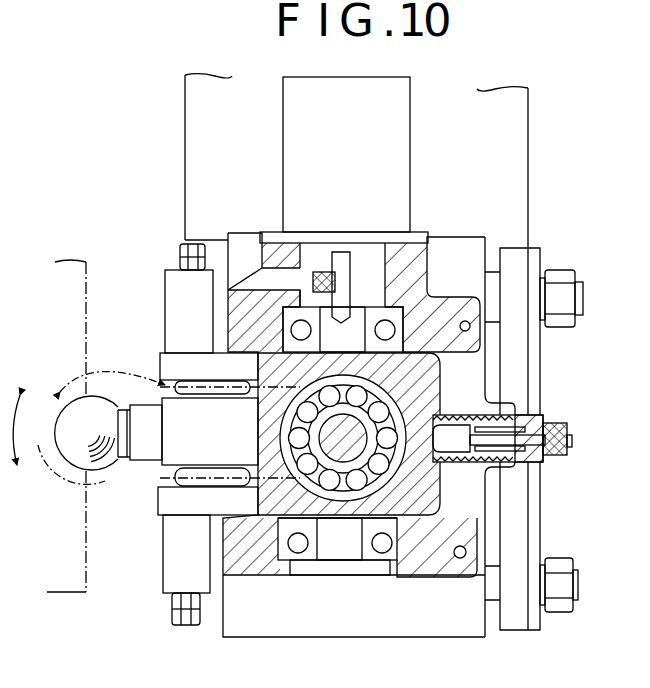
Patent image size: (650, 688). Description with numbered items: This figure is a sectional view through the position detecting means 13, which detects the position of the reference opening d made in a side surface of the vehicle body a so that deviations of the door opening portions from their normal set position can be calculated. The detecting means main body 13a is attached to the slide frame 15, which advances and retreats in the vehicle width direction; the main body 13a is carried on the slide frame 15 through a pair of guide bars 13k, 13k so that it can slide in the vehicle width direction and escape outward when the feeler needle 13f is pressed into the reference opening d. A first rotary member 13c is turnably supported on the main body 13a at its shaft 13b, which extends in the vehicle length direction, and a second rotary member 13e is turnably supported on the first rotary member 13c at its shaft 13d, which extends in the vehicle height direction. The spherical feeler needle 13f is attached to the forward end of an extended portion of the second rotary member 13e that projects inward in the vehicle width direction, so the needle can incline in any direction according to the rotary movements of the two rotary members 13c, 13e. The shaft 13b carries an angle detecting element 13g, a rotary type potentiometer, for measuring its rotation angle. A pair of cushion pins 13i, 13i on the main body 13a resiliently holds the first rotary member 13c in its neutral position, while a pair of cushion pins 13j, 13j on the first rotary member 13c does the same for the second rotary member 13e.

The position detecting means 13 is at (143, 323).
The detecting means main body 13a is at (470, 365).
The shaft 13b is at (396, 282).
The first rotary member 13c is at (408, 495).
The shaft 13d is at (340, 470).
The second rotary member 13e is at (175, 450).
The spherical feeler needle 13f is at (65, 450).
The angle detecting element 13g is at (406, 134).
The cushion pin 13i is at (455, 445).
The cushion pin 13j is at (162, 385).
The guide bar 13k is at (498, 262).
The slide frame 15 is at (519, 198).
The vehicle body a is at (63, 596).
The reference opening d is at (62, 390).